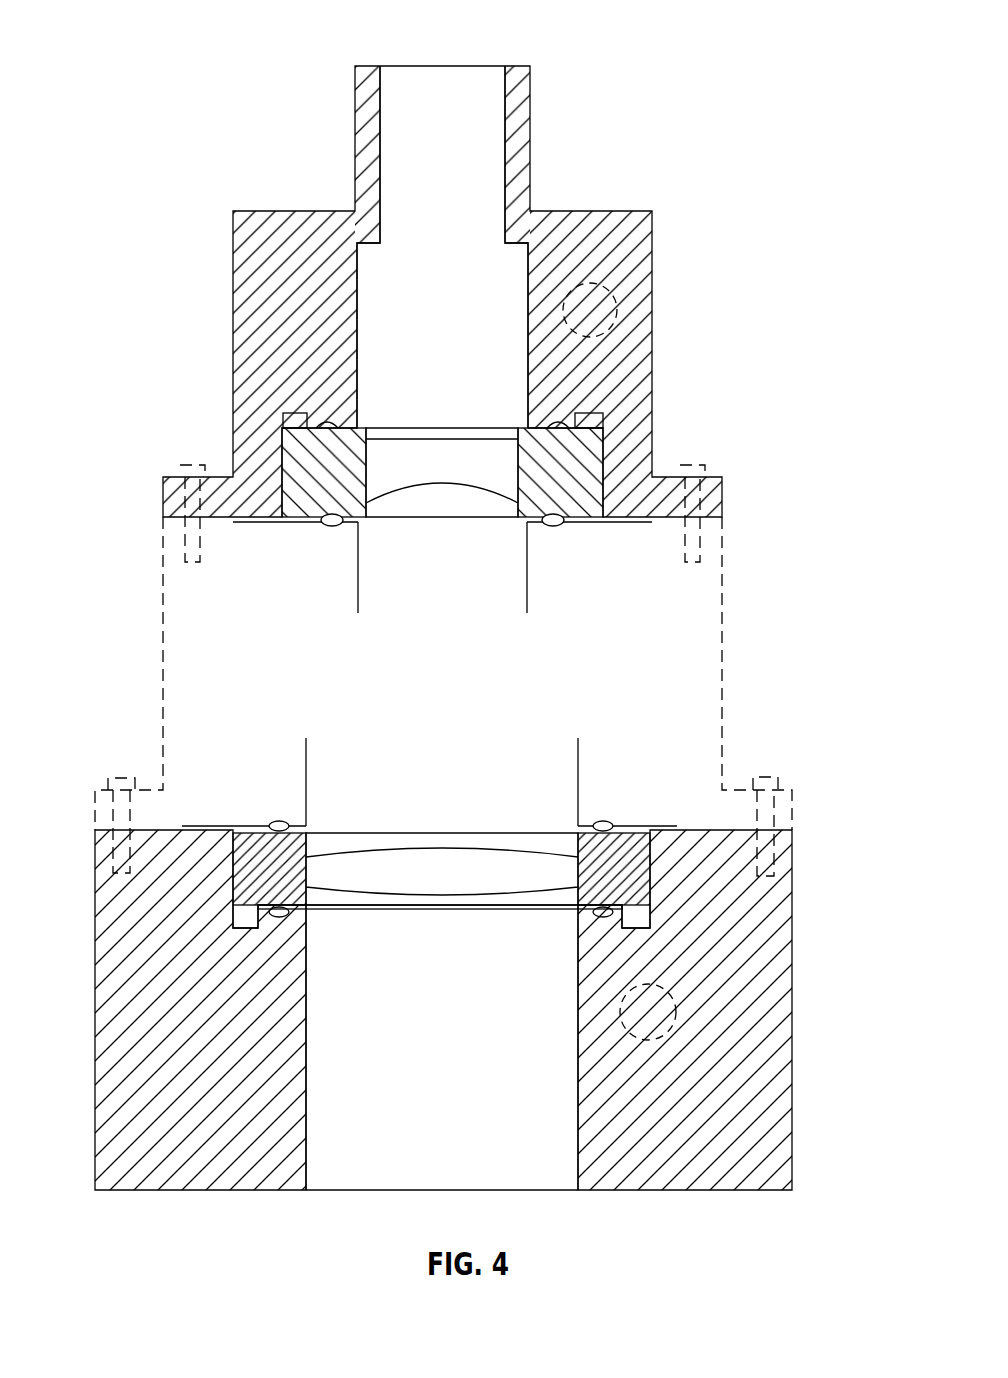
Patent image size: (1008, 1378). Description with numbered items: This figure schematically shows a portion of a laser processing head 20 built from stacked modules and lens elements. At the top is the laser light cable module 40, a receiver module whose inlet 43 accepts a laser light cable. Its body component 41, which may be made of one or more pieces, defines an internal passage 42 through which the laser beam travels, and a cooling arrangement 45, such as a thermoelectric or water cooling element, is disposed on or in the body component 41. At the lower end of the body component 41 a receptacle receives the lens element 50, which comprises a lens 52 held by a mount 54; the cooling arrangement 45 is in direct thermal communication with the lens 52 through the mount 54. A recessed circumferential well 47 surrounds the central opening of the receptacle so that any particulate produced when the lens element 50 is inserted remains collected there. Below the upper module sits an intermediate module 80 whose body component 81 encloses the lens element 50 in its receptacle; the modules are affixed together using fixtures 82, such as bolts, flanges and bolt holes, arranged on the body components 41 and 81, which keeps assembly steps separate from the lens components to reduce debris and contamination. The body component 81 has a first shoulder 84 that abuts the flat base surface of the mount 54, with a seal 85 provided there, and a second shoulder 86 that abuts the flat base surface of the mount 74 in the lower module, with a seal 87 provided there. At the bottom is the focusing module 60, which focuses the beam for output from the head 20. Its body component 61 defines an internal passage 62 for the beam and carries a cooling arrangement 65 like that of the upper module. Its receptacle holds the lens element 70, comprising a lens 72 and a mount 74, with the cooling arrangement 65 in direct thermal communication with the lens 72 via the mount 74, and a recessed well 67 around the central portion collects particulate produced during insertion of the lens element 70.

The processing head 20 is at (177, 42).
The laser light cable module 40 is at (758, 199).
The body component 41 is at (233, 288).
The internal passage 42 is at (357, 322).
The inlet 43 is at (520, 66).
The cooling arrangement 45 is at (617, 307).
The well 47 is at (283, 420).
The lens element 50 is at (465, 401).
The lens 52 is at (383, 450).
The mount 54 is at (588, 462).
The focusing module 60 is at (822, 990).
The body component 61 is at (110, 1110).
The internal passage 62 is at (306, 1035).
The cooling arrangement 65 is at (674, 1024).
The well 67 is at (233, 922).
The lens element 70 is at (450, 925).
The lens 72 is at (387, 857).
The mount 74 is at (642, 870).
The intermediate module 80 is at (758, 672).
The body component 81 is at (163, 647).
The fixtures 82 is at (185, 465).
The first shoulder 84 is at (360, 565).
The seal 85 is at (330, 527).
The second shoulder 86 is at (577, 763).
The seal 87 is at (603, 822).